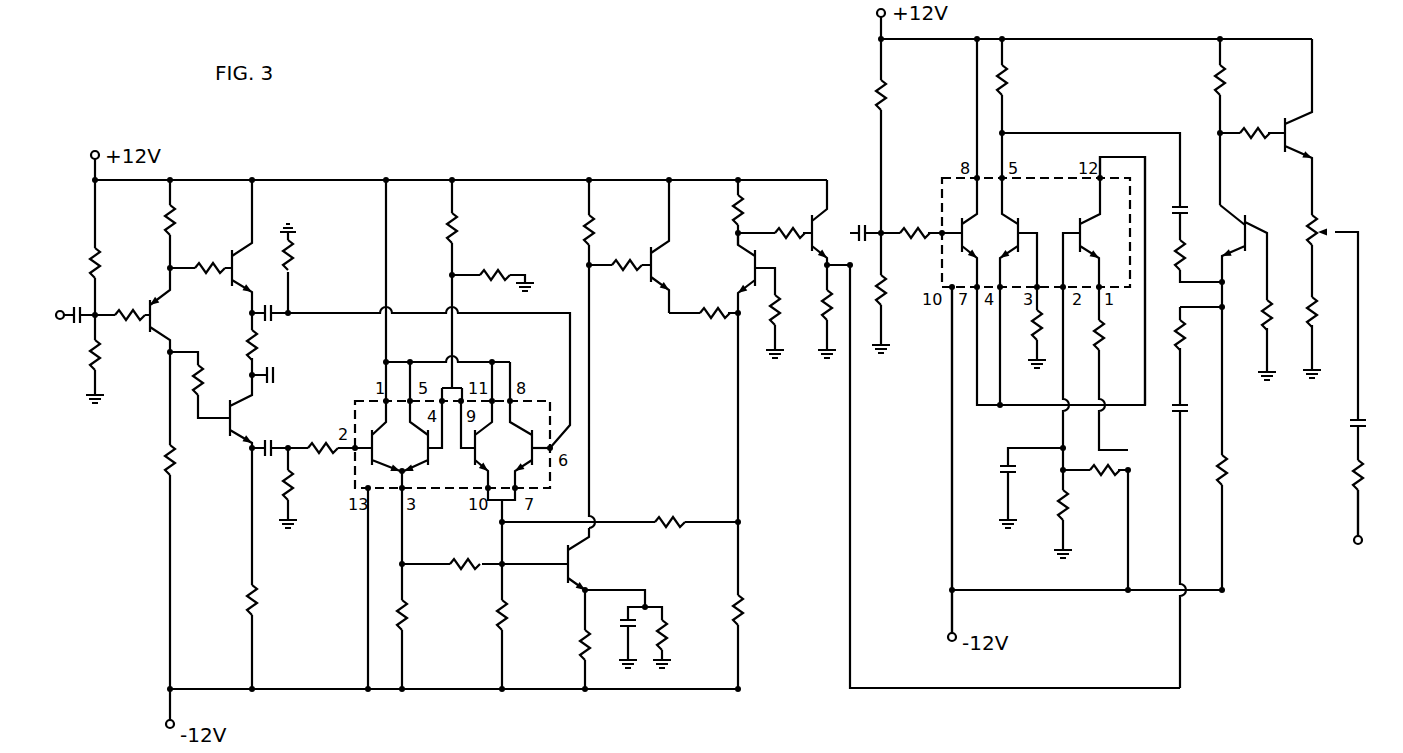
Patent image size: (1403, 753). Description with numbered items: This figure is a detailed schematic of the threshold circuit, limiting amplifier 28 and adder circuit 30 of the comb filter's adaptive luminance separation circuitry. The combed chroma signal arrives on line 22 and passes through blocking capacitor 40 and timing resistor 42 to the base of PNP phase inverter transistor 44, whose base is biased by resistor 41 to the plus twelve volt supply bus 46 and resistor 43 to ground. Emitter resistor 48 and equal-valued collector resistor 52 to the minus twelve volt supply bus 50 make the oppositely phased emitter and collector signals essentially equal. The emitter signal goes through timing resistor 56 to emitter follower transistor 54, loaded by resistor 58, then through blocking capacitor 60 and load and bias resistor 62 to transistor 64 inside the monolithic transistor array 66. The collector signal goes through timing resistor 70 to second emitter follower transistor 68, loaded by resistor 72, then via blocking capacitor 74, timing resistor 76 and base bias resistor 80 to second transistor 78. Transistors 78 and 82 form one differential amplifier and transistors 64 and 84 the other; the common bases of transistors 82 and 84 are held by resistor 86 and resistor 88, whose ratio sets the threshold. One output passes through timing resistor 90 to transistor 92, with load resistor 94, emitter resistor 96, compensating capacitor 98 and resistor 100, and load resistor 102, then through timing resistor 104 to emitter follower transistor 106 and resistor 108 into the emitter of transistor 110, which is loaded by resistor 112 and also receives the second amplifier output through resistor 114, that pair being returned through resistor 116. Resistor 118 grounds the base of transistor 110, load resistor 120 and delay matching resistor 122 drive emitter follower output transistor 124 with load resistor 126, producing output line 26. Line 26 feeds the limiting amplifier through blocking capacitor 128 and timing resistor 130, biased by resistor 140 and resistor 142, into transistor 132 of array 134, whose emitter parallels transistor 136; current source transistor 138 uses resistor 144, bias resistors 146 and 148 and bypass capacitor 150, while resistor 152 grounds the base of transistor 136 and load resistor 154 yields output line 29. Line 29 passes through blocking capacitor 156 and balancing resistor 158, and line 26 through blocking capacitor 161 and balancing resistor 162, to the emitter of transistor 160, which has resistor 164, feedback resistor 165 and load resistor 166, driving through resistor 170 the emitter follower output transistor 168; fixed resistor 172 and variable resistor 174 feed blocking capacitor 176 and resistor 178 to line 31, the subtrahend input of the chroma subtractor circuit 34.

The line 22 is at (67, 309).
The output line 26 is at (850, 565).
The limiting amplifier 28 is at (930, 430).
The output line 29 is at (1074, 132).
The adder circuit 30 is at (1193, 128).
The line 31 is at (1354, 527).
The chroma subtractor circuit 34 is at (1368, 662).
The blocking capacitor 40 is at (63, 322).
The resistor 41 is at (100, 262).
The timing resistor 42 is at (140, 310).
The resistor 43 is at (100, 356).
The phase inverter transistor 44 is at (154, 318).
The plus 12 volt supply bus 46 is at (949, 28).
The emitter resistor 48 is at (172, 218).
The minus 12 volt supply bus 50 is at (220, 689).
The collector resistor 52 is at (168, 450).
The emitter follower transistor 54 is at (236, 264).
The timing resistor 56 is at (222, 262).
The load resistor 58 is at (257, 348).
The blocking capacitor 60 is at (272, 322).
The load and bias resistor 62 is at (292, 265).
The transistor 64 is at (548, 440).
The monolithic integrated circuit transistor array 66 is at (556, 390).
The second emitter follower transistor 68 is at (236, 428).
The timing resistor 70 is at (202, 378).
The load resistor 72 is at (256, 602).
The blocking capacitor 74 is at (272, 440).
The timing resistor 76 is at (322, 455).
The second transistor 78 is at (363, 440).
The base bias resistor 80 is at (292, 498).
The transistor 82 is at (426, 450).
The transistor 84 is at (478, 450).
The resistor 86 is at (456, 240).
The resistor 88 is at (484, 252).
The timing resistor 90 is at (478, 562).
The transistor 92 is at (574, 566).
The load resistor 94 is at (405, 612).
The resistor 96 is at (582, 644).
The capacitor 98 is at (626, 624).
The resistor 100 is at (666, 630).
The load resistor 102 is at (592, 232).
The timing resistor 104 is at (614, 275).
The emitter follower transistor 106 is at (655, 262).
The resistor 108 is at (714, 326).
The transistor 110 is at (752, 268).
The resistor 112 is at (742, 608).
The resistor 114 is at (658, 514).
The resistor 116 is at (505, 612).
The oscillation-suppressing resistor 118 is at (778, 306).
The load resistor 120 is at (736, 206).
The delay matching resistor 122 is at (806, 202).
The emitter follower output transistor 124 is at (809, 240).
The load resistor 126 is at (820, 316).
The blocking capacitor 128 is at (876, 228).
The timing resistor 130 is at (890, 228).
The transistor 132 is at (960, 220).
The monolithic integrated circuit array of transistors 134 is at (953, 168).
The transistor 136 is at (1050, 222).
The transistor 138 is at (1090, 220).
The resistor 140 is at (884, 290).
The resistor 142 is at (884, 100).
The resistor 144 is at (1102, 332).
The resistor 146 is at (1058, 512).
The resistor 148 is at (1094, 474).
The bypass capacitor 150 is at (999, 458).
The low value resistor 152 is at (1030, 330).
The load resistor 154 is at (1008, 84).
The blocking capacitor 156 is at (1184, 212).
The balancing resistor 158 is at (1184, 252).
The transistor 160 is at (1248, 232).
The blocking capacitor 161 is at (1180, 406).
The balancing resistor 162 is at (1172, 328).
The resistor 164 is at (1226, 470).
The feedback resistor 165 is at (1264, 306).
The load resistor 166 is at (1224, 76).
The emitter follower output transistor 168 is at (1288, 130).
The isolating and delay matching resistor 170 is at (1238, 130).
The fixed resistor 172 is at (1350, 292).
The variable resistor 174 is at (1318, 218).
The blocking capacitor 176 is at (1352, 420).
The resistor 178 is at (1354, 474).